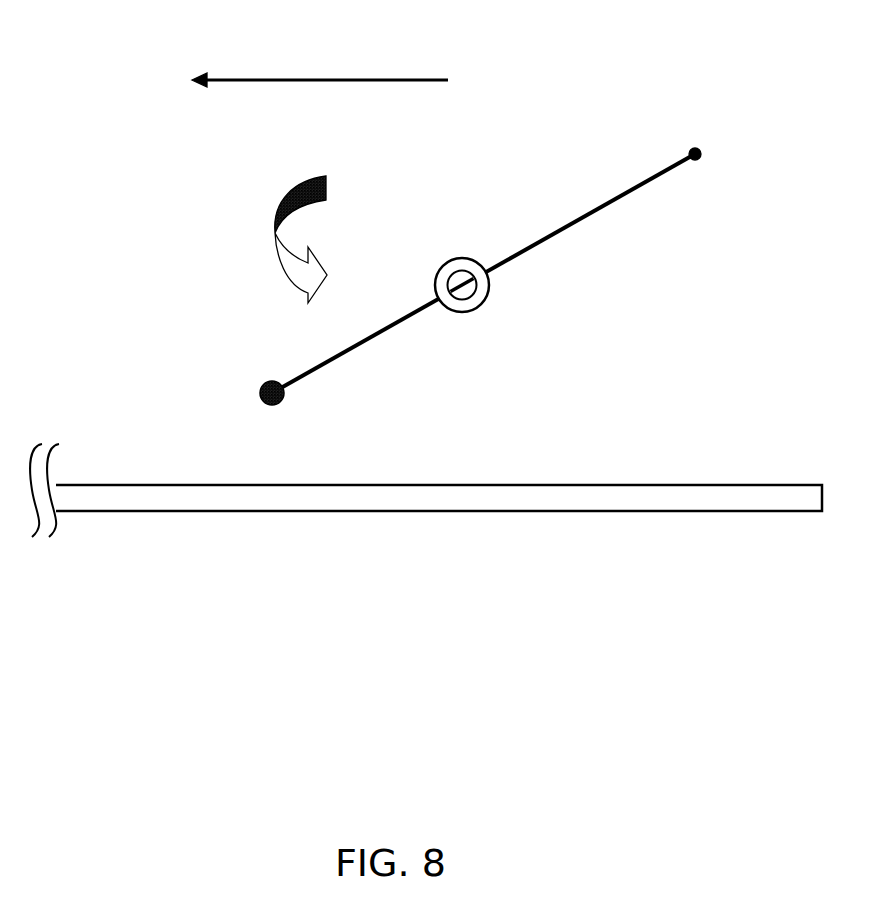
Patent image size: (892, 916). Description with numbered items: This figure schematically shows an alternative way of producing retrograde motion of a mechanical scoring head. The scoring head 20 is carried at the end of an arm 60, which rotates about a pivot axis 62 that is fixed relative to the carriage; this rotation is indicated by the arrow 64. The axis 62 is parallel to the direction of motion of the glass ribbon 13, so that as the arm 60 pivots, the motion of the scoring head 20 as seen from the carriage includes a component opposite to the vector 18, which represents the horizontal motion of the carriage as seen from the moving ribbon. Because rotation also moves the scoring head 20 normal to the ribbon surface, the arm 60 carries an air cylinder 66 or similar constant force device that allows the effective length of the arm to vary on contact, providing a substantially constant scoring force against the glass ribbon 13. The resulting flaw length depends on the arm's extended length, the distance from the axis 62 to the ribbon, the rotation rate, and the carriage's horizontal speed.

The glass ribbon 13 is at (505, 494).
The vector representing horizontal component of motion of carriage 18 is at (358, 80).
The mechanical scoring head 20 is at (283, 401).
The arm 60 is at (563, 237).
The pivot axis for arm 62 is at (700, 160).
The arrow indicating rotation of arm 64 is at (287, 213).
The constant force device, e.g., air cylinder 66 is at (474, 298).